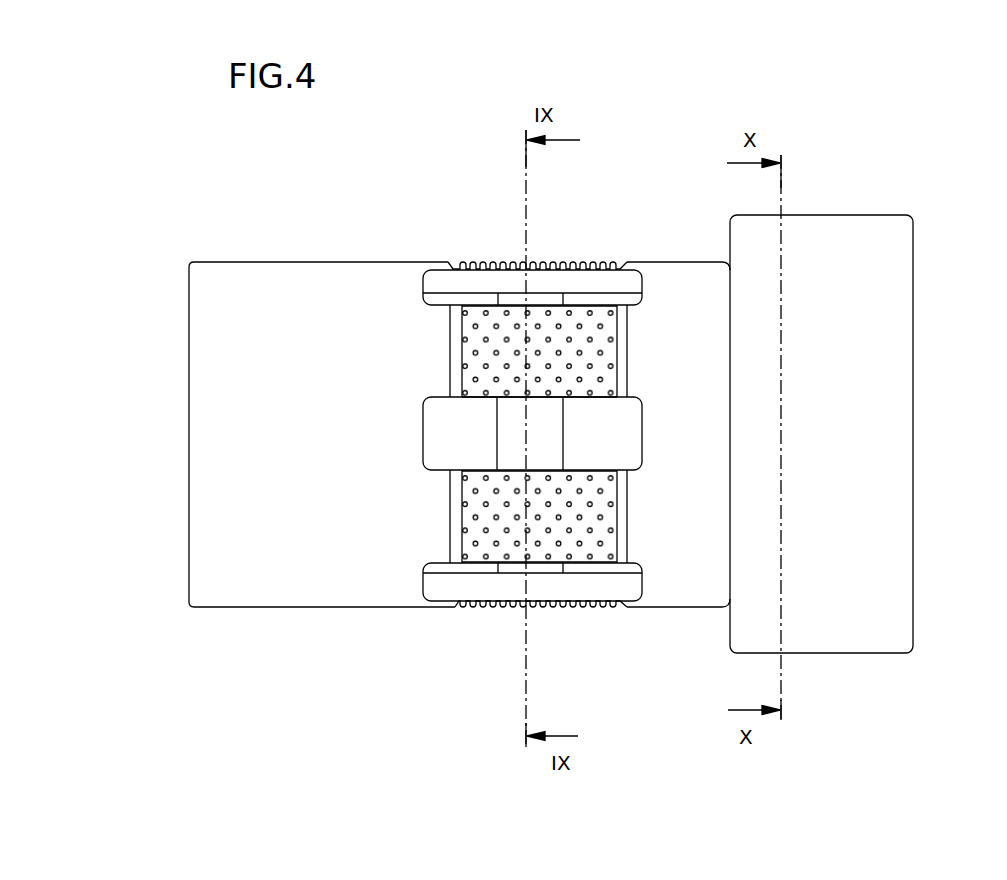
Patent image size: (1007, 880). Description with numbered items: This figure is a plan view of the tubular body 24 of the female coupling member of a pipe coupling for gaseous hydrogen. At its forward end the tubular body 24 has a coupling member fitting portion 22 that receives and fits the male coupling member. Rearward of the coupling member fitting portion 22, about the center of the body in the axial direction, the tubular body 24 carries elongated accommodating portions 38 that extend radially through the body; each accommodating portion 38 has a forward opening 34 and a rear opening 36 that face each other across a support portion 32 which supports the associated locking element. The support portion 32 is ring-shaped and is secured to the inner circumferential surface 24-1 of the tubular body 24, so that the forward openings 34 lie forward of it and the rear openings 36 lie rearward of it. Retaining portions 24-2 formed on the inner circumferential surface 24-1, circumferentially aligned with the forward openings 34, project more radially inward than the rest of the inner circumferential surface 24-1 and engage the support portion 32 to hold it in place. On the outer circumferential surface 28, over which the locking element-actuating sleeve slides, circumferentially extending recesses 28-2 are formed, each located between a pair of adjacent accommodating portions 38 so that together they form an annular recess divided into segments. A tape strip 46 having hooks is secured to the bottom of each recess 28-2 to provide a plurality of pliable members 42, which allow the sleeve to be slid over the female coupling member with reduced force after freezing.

The coupling member fitting portion 22 is at (694, 252).
The tubular body 24 is at (224, 232).
The inner circumferential surface 24-1 is at (440, 305).
The retaining portions 24-2 is at (612, 318).
The outer circumferential surface 28 is at (324, 529).
The circumferentially extending recesses 28-2 is at (452, 383).
The support portion 32 is at (500, 264).
The forward opening 34 is at (628, 288).
The rear opening 36 is at (443, 282).
The elongated accommodating portion 38 is at (536, 264).
The pliable members 42 is at (463, 265).
The tape strip 46 is at (446, 333).